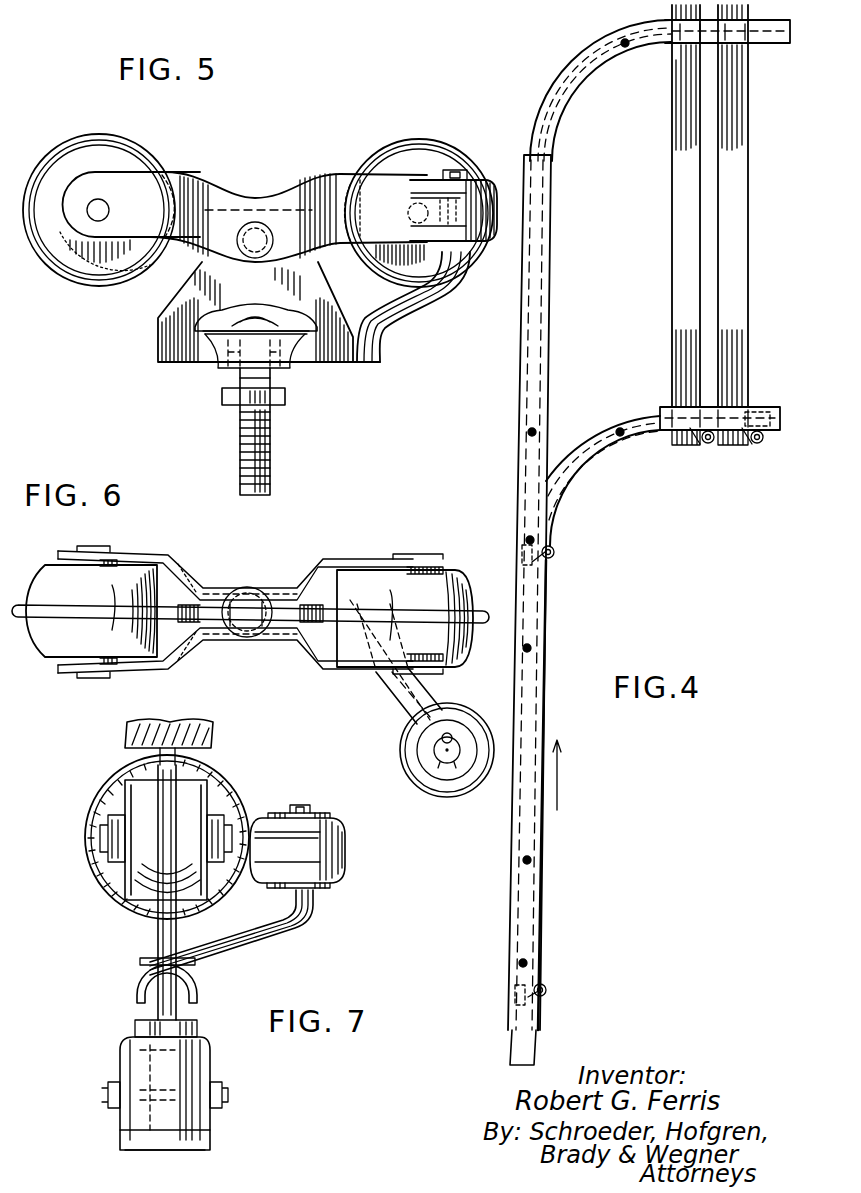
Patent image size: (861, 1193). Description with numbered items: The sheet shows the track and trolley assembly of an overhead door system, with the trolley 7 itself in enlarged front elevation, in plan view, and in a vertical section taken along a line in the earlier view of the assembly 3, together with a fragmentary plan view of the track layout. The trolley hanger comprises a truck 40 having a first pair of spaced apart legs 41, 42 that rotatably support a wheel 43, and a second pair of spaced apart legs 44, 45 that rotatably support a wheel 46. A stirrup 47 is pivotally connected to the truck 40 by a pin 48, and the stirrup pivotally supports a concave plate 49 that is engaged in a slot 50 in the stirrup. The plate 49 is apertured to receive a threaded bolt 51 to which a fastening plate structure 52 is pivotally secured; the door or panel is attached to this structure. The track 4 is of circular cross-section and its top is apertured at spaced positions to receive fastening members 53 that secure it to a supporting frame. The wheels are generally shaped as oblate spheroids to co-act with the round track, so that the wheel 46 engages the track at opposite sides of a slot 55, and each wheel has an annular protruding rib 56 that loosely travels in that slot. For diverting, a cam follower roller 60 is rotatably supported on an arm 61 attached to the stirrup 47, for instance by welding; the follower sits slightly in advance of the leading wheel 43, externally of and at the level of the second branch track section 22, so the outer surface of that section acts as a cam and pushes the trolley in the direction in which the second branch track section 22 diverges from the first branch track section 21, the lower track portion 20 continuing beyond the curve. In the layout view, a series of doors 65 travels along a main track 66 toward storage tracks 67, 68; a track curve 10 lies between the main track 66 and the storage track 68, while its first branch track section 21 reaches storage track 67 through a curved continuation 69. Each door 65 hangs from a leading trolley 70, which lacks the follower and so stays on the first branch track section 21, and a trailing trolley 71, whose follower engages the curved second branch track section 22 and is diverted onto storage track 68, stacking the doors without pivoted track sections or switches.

In FIG. 7, the base plate 3 is at (212, 1140).
In FIG. 7, the track 4 is at (236, 802).
In FIG. 5, the trolley 7 is at (226, 158).
In FIG. 6, the trolley 7 is at (251, 576).
In FIG. 4, the track curve 10 is at (582, 488).
In FIG. 4, the lower track section 20 is at (545, 588).
In FIG. 4, the first branch track section 21 is at (543, 398).
In FIG. 4, the second branch track section 22 is at (594, 470).
In FIG. 5, the truck 40 is at (325, 178).
In FIG. 6, the leg 41 is at (368, 565).
In FIG. 5, the leg 42 is at (385, 186).
In FIG. 6, the leg 42 is at (348, 672).
In FIG. 5, the wheel 43 is at (445, 152).
In FIG. 6, the wheel 43 is at (462, 580).
In FIG. 6, the leg 44 is at (145, 560).
In FIG. 7, the leg 44 is at (108, 823).
In FIG. 5, the leg 45 is at (168, 172).
In FIG. 6, the leg 45 is at (160, 672).
In FIG. 7, the leg 45 is at (218, 870).
In FIG. 5, the wheel 46 is at (62, 150).
In FIG. 6, the wheel 46 is at (55, 656).
In FIG. 7, the wheel 46 is at (125, 880).
In FIG. 5, the stirrup 47 is at (170, 343).
In FIG. 6, the stirrup 47 is at (236, 626).
In FIG. 7, the stirrup 47 is at (158, 950).
In FIG. 5, the pin 48 is at (258, 224).
In FIG. 6, the pin 48 is at (264, 600).
In FIG. 5, the concave plate 49 is at (288, 355).
In FIG. 6, the concave plate 49 is at (278, 640).
In FIG. 7, the concave plate 49 is at (196, 986).
In FIG. 5, the slot 50 is at (304, 324).
In FIG. 5, the threaded bolt 51 is at (272, 428).
In FIG. 7, the threaded bolt 51 is at (180, 1016).
In FIG. 7, the fastening plate structure 52 is at (212, 1060).
In FIG. 7, the fastening members 53 is at (190, 770).
In FIG. 4, the fastening members 53 is at (530, 433).
In FIG. 7, the slot 55 is at (156, 922).
In FIG. 7, the annular protruding rib 56 is at (108, 775).
In FIG. 6, the cam follower roller 60 is at (412, 776).
In FIG. 7, the cam follower roller 60 is at (345, 855).
In FIG. 4, the cam follower roller 60 is at (708, 444).
In FIG. 5, the arm 61 is at (418, 312).
In FIG. 6, the arm 61 is at (410, 698).
In FIG. 7, the arm 61 is at (300, 927).
In FIG. 4, the doors 65 is at (673, 286).
In FIG. 4, the main track 66 is at (536, 1046).
In FIG. 4, the storage track 67 is at (772, 44).
In FIG. 4, the storage track 68 is at (680, 406).
In FIG. 4, the curved continuation 69 is at (582, 110).
In FIG. 4, the leading trolley 70 is at (660, 26).
In FIG. 4, the trailing trolley 71 is at (746, 410).